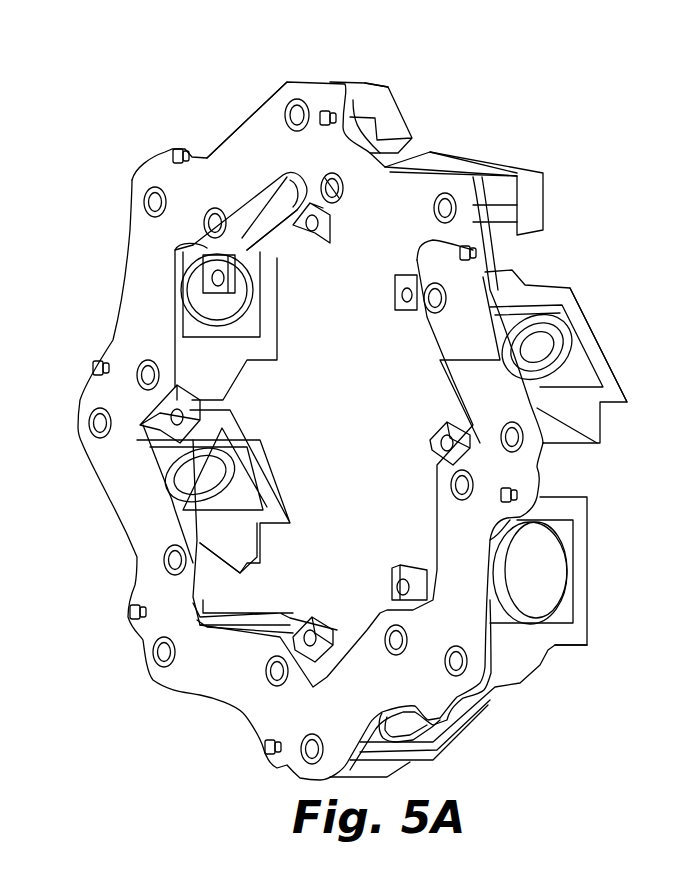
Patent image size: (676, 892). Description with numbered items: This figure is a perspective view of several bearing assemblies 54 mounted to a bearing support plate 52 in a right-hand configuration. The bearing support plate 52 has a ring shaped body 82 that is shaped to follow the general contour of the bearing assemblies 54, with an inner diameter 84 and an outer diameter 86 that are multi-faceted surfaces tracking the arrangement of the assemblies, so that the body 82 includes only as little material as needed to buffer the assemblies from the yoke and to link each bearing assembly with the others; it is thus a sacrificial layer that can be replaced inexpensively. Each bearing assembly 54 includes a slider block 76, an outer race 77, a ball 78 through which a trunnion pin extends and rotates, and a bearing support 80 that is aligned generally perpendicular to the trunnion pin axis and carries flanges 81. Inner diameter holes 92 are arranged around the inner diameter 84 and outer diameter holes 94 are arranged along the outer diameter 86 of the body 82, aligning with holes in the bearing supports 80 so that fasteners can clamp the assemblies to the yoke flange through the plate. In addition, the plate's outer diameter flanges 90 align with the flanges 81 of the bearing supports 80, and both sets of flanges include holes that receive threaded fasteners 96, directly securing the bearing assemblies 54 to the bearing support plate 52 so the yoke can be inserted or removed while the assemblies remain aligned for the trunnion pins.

The bearing support plate 52 is at (225, 147).
The bearing assemblies 54 is at (350, 88).
The slider block 76 is at (552, 323).
The outer race 77 is at (563, 375).
The ball 78 is at (545, 348).
The bearing support 80 is at (550, 285).
The flanges 81 is at (482, 217).
The ring shaped body 82 is at (260, 138).
The inner diameter 84 is at (207, 597).
The outer diameter 86 is at (537, 408).
The outer diameter flange 90 is at (355, 117).
The inner diameter holes 92 is at (332, 200).
The outer diameter holes 94 is at (295, 105).
The threaded fasteners 96 is at (88, 362).